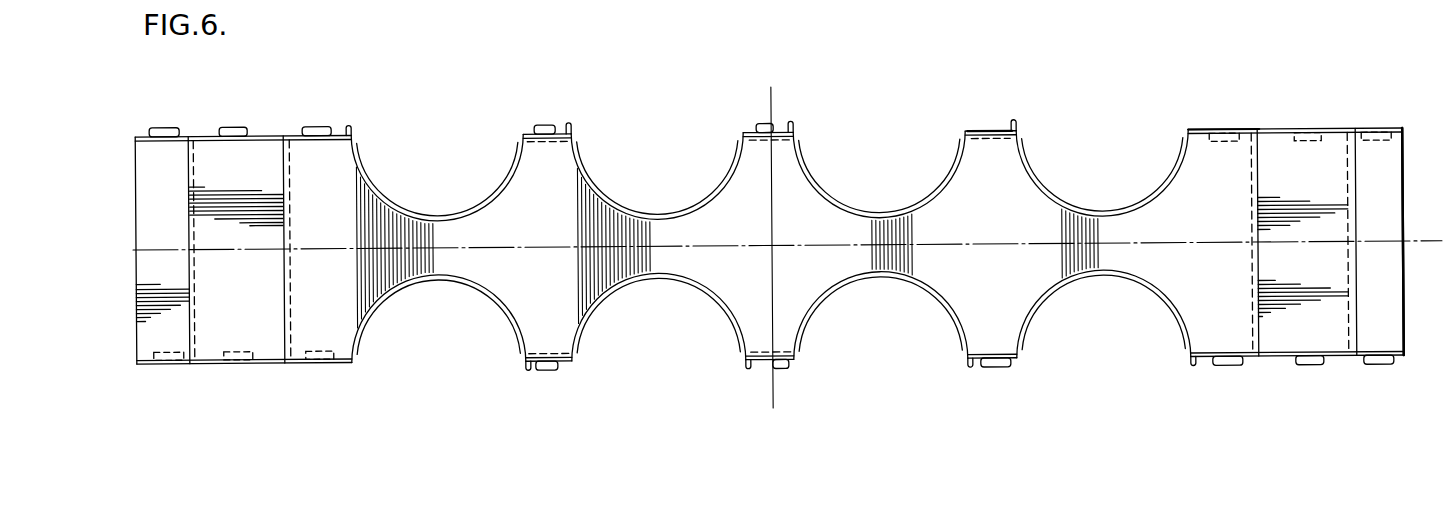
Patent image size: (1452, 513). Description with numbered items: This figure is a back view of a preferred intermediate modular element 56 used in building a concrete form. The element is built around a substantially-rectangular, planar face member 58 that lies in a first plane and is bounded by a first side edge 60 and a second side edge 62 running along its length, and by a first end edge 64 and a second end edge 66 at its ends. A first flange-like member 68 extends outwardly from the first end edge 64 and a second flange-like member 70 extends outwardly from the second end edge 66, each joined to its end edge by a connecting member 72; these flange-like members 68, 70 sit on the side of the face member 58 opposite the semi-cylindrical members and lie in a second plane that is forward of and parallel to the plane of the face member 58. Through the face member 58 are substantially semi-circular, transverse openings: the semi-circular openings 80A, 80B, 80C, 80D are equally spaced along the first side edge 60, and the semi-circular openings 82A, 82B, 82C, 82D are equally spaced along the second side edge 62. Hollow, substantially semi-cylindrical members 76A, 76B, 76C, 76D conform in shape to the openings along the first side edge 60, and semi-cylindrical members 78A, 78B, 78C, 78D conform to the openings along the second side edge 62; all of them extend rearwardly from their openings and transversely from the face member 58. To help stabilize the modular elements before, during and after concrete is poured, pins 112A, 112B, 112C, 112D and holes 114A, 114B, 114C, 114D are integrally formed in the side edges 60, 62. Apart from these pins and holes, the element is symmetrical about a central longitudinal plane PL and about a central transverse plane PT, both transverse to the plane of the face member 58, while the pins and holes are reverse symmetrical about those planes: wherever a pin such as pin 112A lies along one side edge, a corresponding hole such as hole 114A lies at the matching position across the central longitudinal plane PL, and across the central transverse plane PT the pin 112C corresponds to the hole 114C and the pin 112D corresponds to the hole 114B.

The intermediate modular element 56 is at (1205, 122).
The face member 58 is at (1022, 215).
The first side edge 60 is at (985, 122).
The second side edge 62 is at (550, 366).
The first end edge 64 is at (1262, 172).
The second end edge 66 is at (283, 172).
The first flange-like member 68 is at (1385, 170).
The second flange-like member 70 is at (150, 178).
The connecting member 72 is at (218, 172).
The semi-cylindrical member 76A is at (1148, 218).
The semi-cylindrical member 76B is at (900, 220).
The semi-cylindrical member 76C is at (676, 222).
The semi-cylindrical member 76D is at (478, 217).
The semi-cylindrical member 78A is at (1160, 287).
The semi-cylindrical member 78B is at (945, 286).
The semi-cylindrical member 78C is at (693, 276).
The semi-cylindrical member 78D is at (475, 278).
The semi-circular opening 80A is at (1120, 170).
The semi-circular opening 80B is at (850, 150).
The semi-circular opening 80C is at (650, 163).
The semi-circular opening 80D is at (420, 163).
The semi-circular opening 82A is at (1117, 292).
The semi-circular opening 82B is at (905, 320).
The semi-circular opening 82C is at (645, 298).
The semi-circular opening 82D is at (463, 315).
The pin 112A is at (1235, 375).
The pin 112B is at (990, 377).
The pin 112C is at (758, 122).
The pin 112D is at (545, 122).
The hole 114A is at (1222, 145).
The hole 114B is at (987, 145).
The hole 114C is at (778, 143).
The hole 114D is at (545, 342).
The central longitudinal plane PL is at (867, 250).
The central transverse plane PT is at (776, 244).